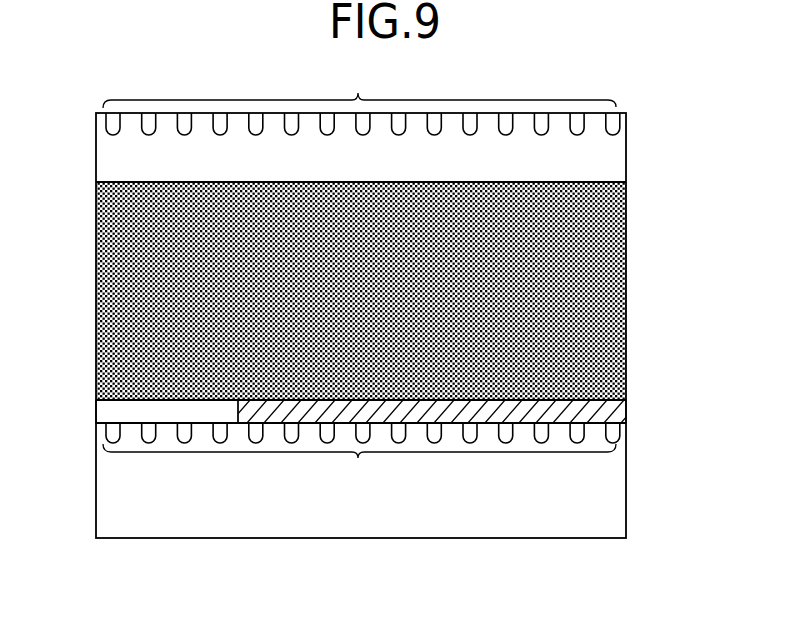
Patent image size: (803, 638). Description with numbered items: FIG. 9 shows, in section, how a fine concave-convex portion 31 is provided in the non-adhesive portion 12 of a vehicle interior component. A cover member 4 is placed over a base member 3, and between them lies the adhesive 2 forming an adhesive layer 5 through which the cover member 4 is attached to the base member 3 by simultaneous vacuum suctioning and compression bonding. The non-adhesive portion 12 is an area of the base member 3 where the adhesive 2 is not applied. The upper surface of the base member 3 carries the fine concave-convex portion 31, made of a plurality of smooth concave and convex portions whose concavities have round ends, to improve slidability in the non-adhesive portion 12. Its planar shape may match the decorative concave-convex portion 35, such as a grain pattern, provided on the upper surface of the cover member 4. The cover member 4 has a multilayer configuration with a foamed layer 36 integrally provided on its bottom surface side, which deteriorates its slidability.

The cover member 4 is at (565, 163).
The decorative concave-convex portion 35 is at (359, 86).
The foamed layer 36 is at (565, 282).
The non-adhesive portion 12 is at (167, 428).
The adhesive 2 is at (493, 409).
The adhesive layer 5 is at (593, 413).
The base member 3 is at (565, 490).
The fine concave-convex portion 31 is at (358, 458).